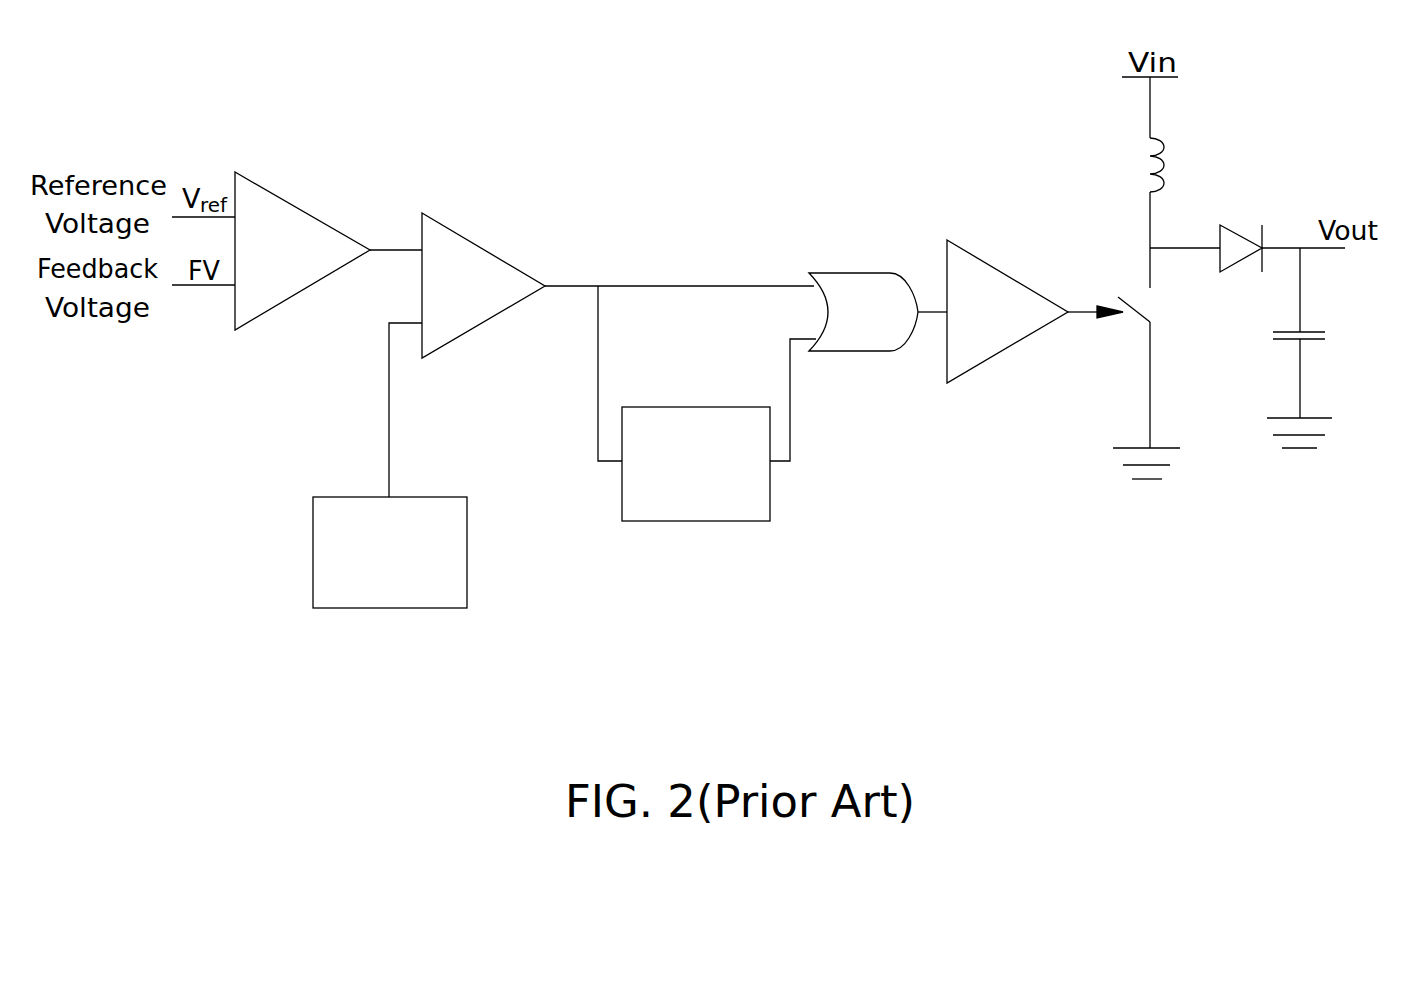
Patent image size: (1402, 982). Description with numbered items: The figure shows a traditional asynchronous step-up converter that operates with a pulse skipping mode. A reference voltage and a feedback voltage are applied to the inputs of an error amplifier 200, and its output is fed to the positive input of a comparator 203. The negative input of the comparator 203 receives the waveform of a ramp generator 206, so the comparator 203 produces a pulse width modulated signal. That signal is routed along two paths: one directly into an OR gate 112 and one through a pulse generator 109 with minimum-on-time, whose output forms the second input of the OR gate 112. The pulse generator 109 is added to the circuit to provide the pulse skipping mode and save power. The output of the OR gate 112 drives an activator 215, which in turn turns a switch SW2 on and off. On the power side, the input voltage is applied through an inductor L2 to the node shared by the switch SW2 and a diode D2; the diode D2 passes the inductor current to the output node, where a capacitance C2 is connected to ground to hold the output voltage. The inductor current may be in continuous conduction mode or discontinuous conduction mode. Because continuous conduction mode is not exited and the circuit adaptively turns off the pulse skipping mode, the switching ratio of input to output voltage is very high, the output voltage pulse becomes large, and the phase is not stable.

The error amplifier 200 is at (275, 190).
The comparator 203 is at (455, 228).
The ramp generator 206 is at (413, 601).
The pulse generator 109 is at (720, 510).
The OR gate 112 is at (887, 349).
The activator 215 is at (1003, 268).
The switch SW2 is at (1155, 383).
The inductor L2 is at (1175, 182).
The diode D2 is at (1247, 235).
The capacitance C2 is at (1312, 348).